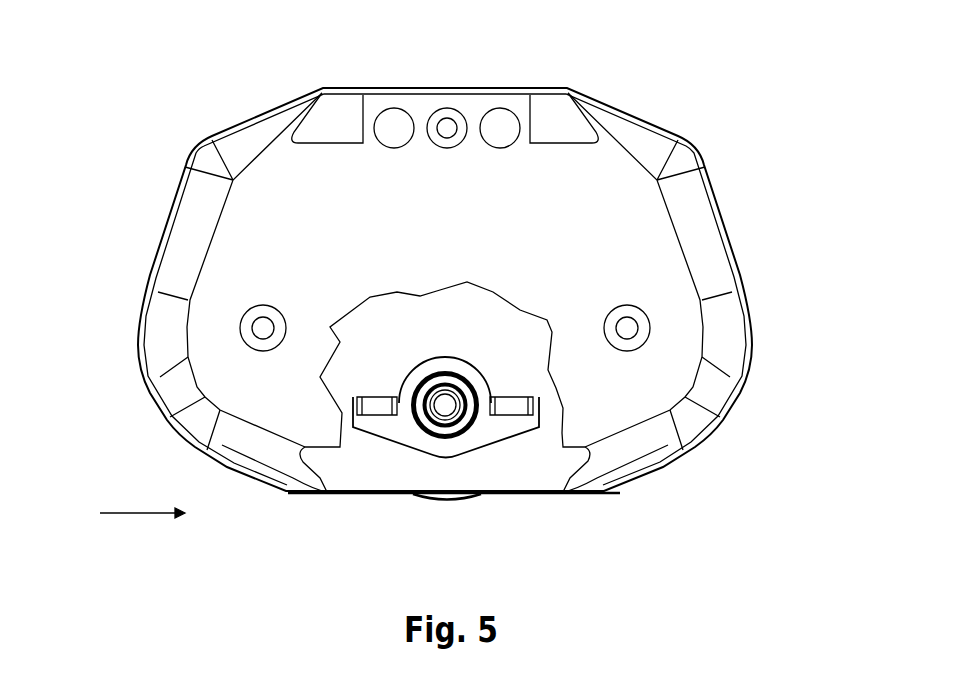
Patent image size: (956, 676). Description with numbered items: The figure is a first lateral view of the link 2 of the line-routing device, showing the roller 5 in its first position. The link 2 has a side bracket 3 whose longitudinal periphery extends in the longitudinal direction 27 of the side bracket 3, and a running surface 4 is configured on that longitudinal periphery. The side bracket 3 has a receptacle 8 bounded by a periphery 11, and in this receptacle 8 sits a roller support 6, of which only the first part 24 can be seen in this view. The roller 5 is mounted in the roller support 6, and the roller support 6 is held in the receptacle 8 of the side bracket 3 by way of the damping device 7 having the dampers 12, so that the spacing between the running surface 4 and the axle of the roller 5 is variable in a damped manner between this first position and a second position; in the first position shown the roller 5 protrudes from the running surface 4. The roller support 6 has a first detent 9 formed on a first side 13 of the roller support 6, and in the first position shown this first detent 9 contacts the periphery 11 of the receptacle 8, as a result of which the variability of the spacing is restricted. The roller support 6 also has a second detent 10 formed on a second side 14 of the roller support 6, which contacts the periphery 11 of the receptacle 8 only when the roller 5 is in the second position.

The link 2 is at (752, 106).
The side bracket 3 is at (717, 194).
The running surface 4 is at (503, 495).
The roller 5 is at (452, 502).
The roller support 6 is at (446, 484).
The damping device 7 is at (503, 473).
The receptacle 8 is at (457, 393).
The first detent 9 is at (445, 433).
The second detent 10 is at (321, 232).
The periphery 11 is at (465, 357).
The dampers 12 is at (377, 407).
The first side 13 is at (507, 440).
The second side 14 is at (421, 359).
The first part 24 is at (407, 432).
The longitudinal direction 27 is at (142, 515).